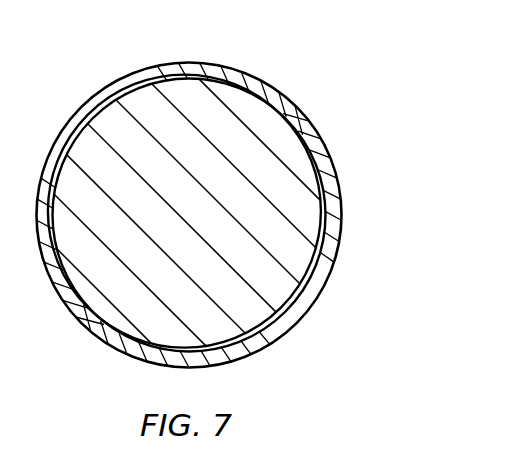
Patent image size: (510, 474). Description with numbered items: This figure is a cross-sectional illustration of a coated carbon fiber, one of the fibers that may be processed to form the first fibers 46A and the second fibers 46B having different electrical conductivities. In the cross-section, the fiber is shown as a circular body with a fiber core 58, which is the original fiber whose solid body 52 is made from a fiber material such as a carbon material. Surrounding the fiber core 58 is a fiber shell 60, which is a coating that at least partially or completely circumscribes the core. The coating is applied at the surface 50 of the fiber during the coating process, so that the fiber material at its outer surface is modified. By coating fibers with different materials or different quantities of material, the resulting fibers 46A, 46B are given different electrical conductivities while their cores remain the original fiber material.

The first fibers 46A is at (246, 191).
The second fibers 46B is at (246, 215).
The surface 50 is at (323, 146).
The solid body 52 is at (254, 215).
The fiber core 58 is at (323, 231).
The fiber shell 60 is at (314, 304).